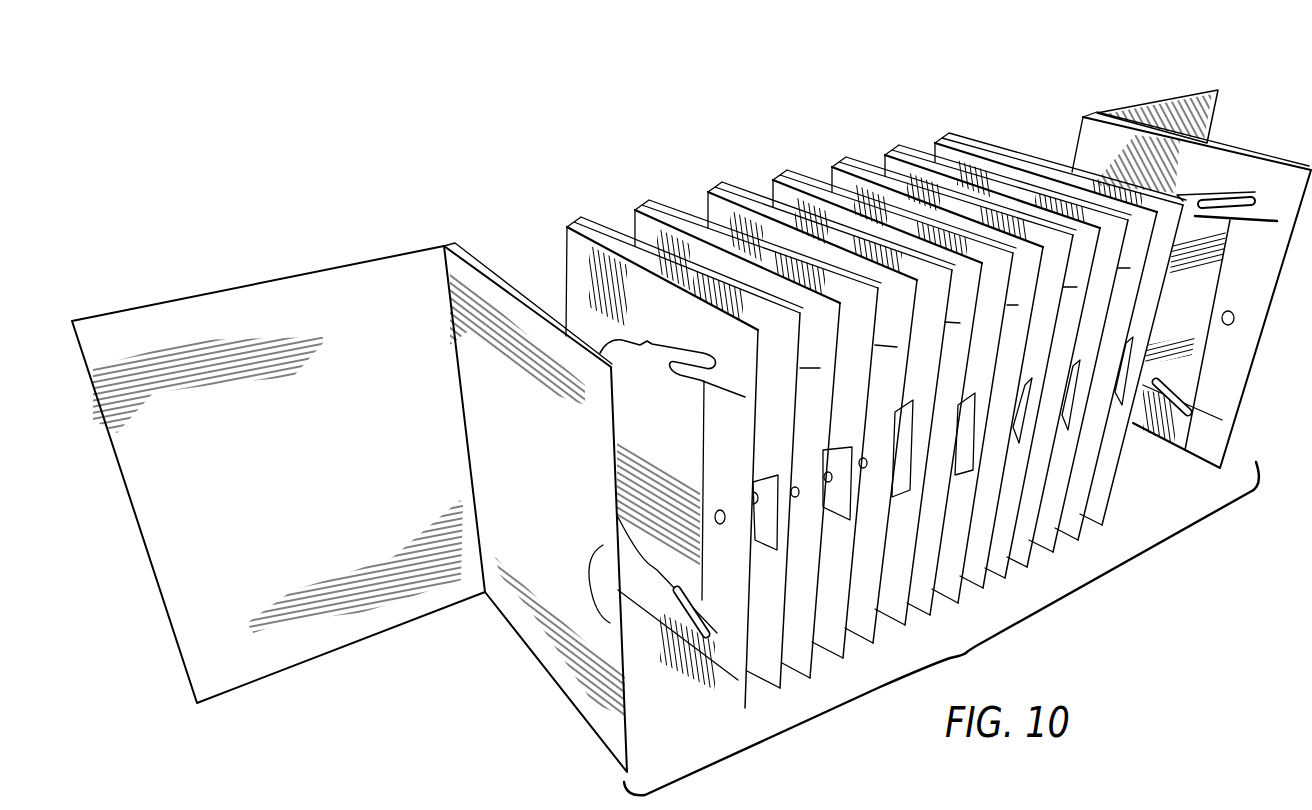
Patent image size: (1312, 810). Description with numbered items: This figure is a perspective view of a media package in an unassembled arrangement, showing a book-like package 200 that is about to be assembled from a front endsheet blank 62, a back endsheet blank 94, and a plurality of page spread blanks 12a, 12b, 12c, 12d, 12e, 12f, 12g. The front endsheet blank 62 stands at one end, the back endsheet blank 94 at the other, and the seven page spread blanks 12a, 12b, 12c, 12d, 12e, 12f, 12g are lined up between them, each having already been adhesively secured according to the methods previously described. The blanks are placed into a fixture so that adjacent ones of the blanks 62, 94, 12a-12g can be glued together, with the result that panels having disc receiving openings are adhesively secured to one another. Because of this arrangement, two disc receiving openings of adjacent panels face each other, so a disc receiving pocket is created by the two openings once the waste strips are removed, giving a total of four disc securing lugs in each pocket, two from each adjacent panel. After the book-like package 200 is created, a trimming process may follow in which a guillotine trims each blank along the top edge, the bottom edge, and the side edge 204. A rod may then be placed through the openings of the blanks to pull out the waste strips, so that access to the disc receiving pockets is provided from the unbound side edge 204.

The book-like package 200 is at (522, 150).
The front endsheet blank 62 is at (310, 286).
The page spread blank 12a is at (573, 240).
The page spread blank 12b is at (648, 218).
The page spread blank 12c is at (718, 197).
The page spread blank 12d is at (779, 190).
The page spread blank 12e is at (838, 180).
The page spread blank 12f is at (891, 166).
The page spread blank 12g is at (943, 155).
The back endsheet blank 94 is at (1176, 90).
The side edge 204 is at (605, 738).